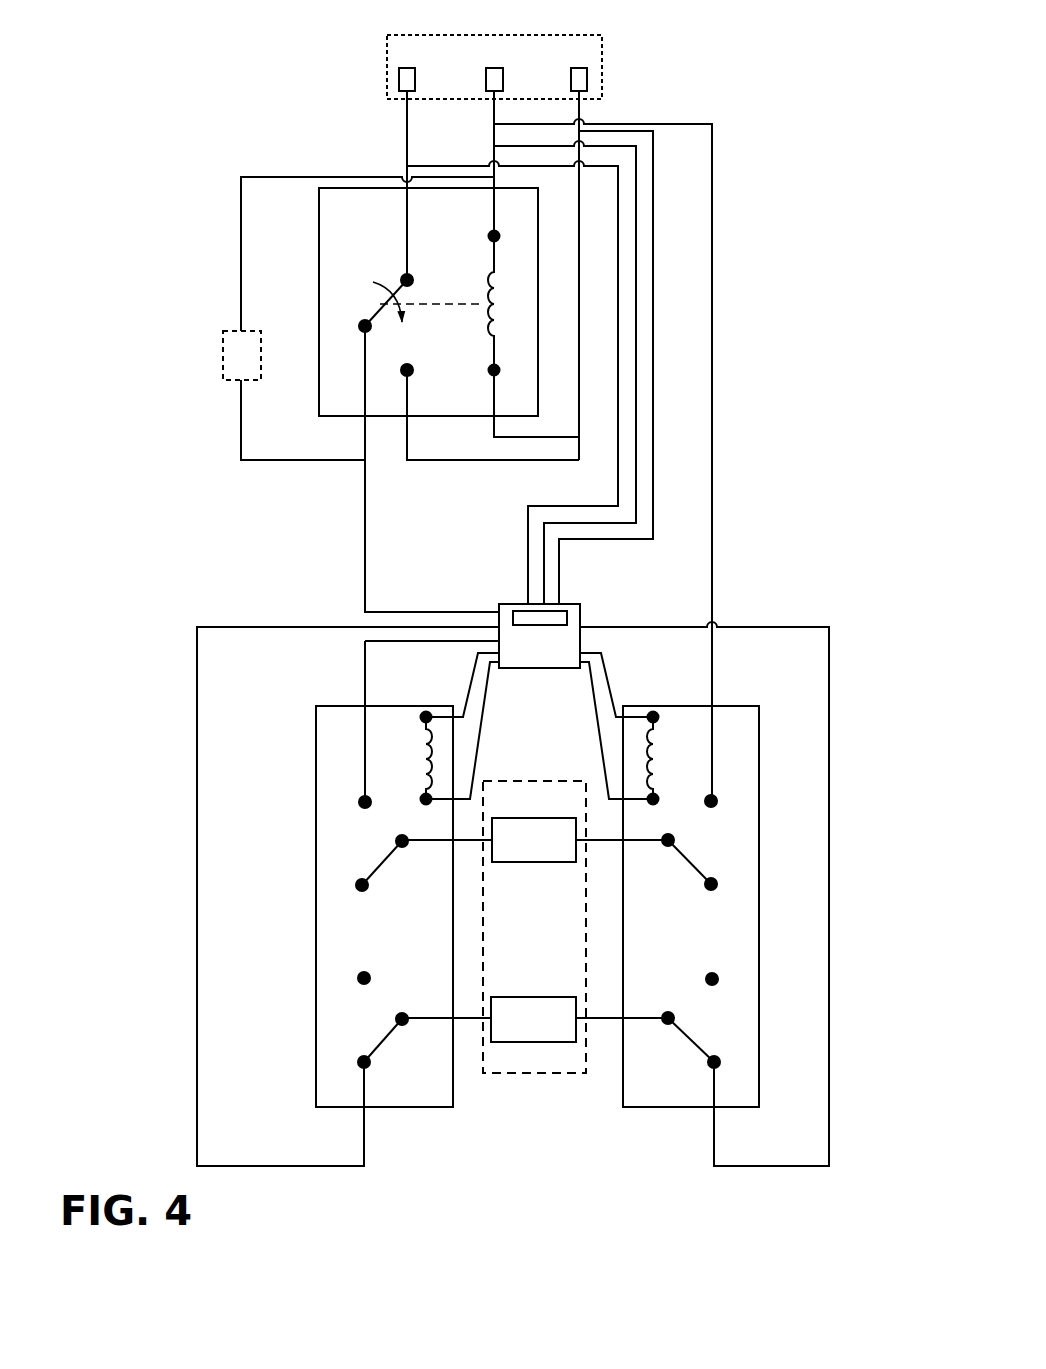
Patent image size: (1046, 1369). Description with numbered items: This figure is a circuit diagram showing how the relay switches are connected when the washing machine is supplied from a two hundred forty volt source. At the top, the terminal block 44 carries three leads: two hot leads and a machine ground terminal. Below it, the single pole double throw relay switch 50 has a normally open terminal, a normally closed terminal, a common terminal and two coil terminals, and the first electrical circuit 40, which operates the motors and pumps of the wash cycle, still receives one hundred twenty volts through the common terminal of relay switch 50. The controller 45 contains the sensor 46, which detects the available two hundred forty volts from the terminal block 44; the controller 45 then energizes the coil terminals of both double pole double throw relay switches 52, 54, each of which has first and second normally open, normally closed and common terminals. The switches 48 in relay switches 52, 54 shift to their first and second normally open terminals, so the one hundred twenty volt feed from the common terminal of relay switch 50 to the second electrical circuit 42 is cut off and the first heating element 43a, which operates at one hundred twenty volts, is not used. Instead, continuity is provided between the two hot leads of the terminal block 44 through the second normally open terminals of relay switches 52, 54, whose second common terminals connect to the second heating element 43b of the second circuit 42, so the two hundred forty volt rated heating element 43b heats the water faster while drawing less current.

The terminal block 44 is at (604, 63).
The single pole double throw relay switch 50 is at (319, 259).
The first electrical circuit 40 is at (242, 355).
The controller 45 is at (513, 604).
The sensor 46 is at (560, 618).
The switches 48 is at (347, 868).
The double pole double throw relay switch 52 is at (420, 1107).
The double pole double throw relay switch 54 is at (672, 1107).
The second electrical circuit 42 is at (551, 944).
The first heating element 43a is at (514, 851).
The second heating element 43b is at (513, 1031).